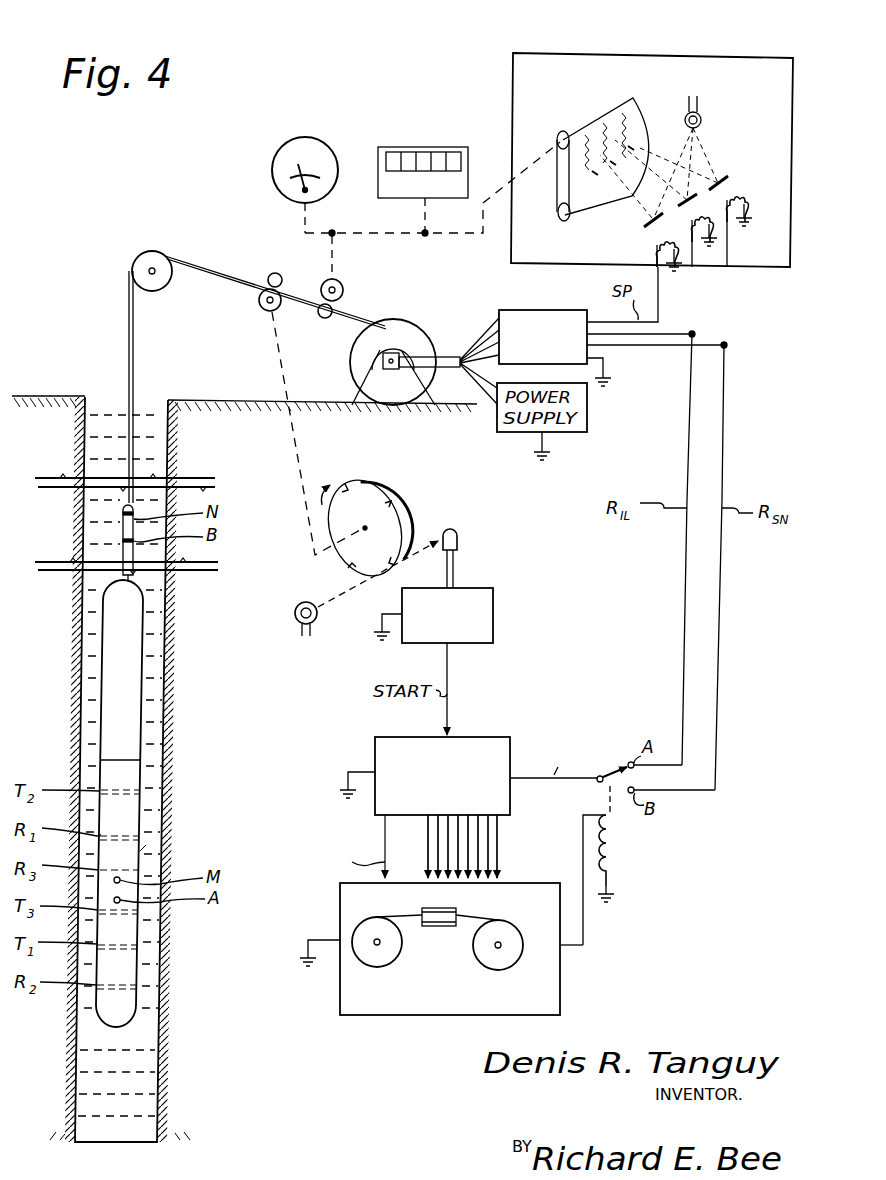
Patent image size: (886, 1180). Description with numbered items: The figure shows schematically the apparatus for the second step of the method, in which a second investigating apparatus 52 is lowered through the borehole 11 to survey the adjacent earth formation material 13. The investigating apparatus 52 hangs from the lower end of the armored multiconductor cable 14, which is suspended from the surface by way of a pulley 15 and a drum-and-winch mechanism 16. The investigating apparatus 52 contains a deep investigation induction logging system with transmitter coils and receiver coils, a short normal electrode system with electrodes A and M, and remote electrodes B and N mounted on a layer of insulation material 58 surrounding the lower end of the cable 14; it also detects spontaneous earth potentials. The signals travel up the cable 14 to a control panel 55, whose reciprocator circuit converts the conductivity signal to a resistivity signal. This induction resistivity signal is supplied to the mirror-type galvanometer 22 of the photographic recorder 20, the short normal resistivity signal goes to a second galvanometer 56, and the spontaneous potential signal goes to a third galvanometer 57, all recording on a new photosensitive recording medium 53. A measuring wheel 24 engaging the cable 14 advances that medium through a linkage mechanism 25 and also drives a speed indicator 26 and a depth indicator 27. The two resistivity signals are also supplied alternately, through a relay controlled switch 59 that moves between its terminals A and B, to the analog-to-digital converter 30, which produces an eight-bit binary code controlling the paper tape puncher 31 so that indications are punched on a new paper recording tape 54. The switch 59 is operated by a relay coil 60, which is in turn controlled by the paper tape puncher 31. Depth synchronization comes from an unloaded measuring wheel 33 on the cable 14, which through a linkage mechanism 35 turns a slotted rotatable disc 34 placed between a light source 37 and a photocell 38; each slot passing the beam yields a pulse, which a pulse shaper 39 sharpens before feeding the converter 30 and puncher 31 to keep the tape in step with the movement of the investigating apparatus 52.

The borehole 11 is at (159, 734).
The earth formation material 13 is at (190, 800).
The armored multiconductor cable 14 is at (121, 332).
The pulley 15 is at (125, 264).
The drum-and-winch mechanism 16 is at (421, 332).
The photographic recorder 20 is at (615, 157).
The mirror-type galvanometer 22 is at (728, 224).
The measuring wheel 24 is at (343, 290).
The linkage mechanism 25 is at (376, 233).
The speed indicator 26 is at (307, 136).
The depth indicator 27 is at (423, 147).
The analog-to-digital converter 30 is at (470, 736).
The paper tape puncher 31 is at (468, 949).
The unloaded measuring wheel 33 is at (262, 307).
The rotatable disc 34 is at (378, 487).
The linkage mechanism 35 is at (284, 373).
The light source 37 is at (300, 600).
The photocell 38 is at (458, 530).
The pulse shaper 39 is at (493, 612).
The investigating apparatus 52 is at (140, 852).
The photosensitive recording medium 53 is at (570, 175).
The paper recording tape 54 is at (466, 915).
The control panel 55 is at (545, 310).
The second galvanometer 56 is at (732, 178).
The third galvanometer 57 is at (643, 228).
The layer of insulation material 58 is at (120, 532).
The relay controlled switch 59 is at (606, 771).
The relay coil 60 is at (619, 846).